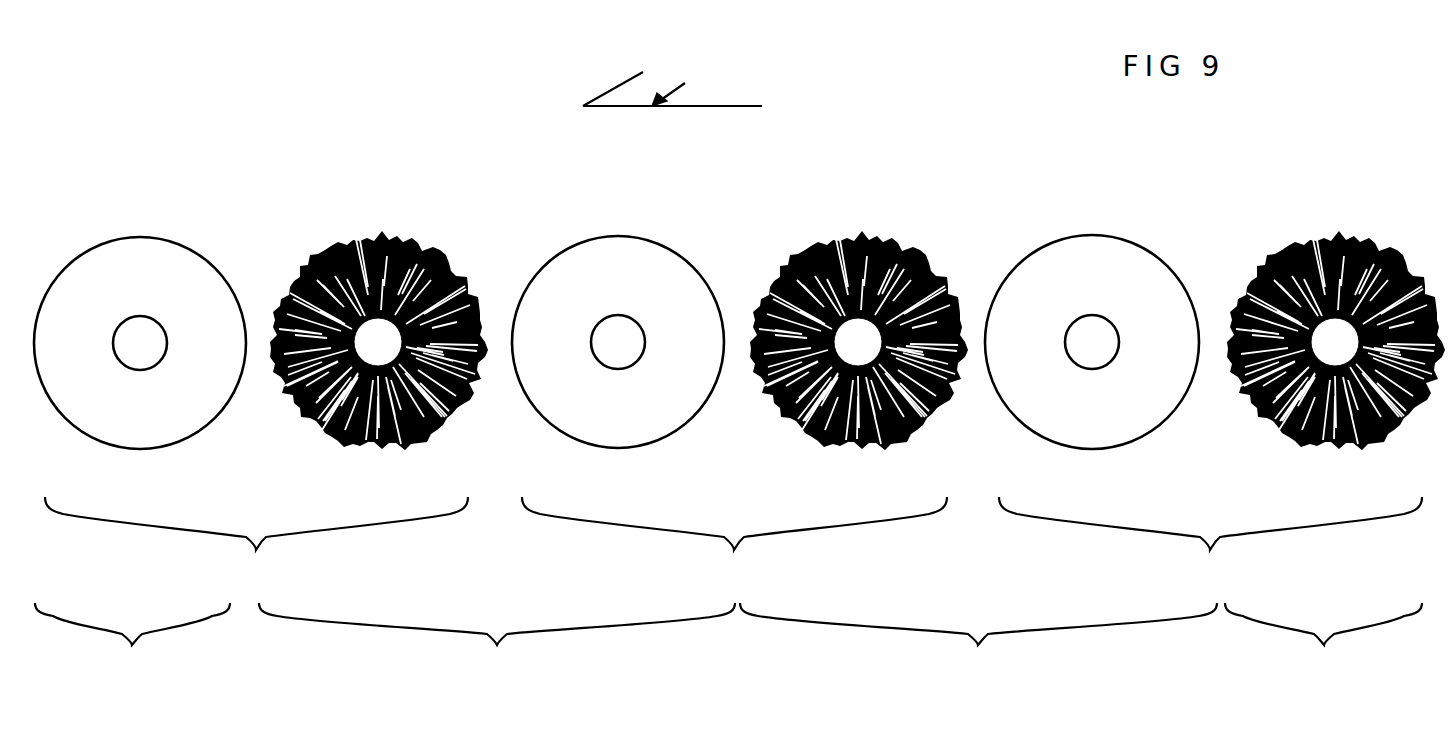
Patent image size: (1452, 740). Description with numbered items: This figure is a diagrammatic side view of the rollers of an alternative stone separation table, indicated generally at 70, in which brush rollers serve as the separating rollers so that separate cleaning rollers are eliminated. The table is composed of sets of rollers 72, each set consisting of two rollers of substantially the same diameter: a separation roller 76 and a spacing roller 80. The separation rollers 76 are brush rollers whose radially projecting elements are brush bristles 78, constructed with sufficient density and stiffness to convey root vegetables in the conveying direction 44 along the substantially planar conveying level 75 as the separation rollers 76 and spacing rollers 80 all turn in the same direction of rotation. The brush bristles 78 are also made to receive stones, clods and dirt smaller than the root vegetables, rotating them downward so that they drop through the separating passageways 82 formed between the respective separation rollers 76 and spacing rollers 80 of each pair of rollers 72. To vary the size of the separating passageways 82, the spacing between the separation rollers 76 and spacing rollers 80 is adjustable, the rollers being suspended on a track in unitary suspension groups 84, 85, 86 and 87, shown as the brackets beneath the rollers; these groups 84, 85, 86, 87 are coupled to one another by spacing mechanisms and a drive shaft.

The conveying direction 44 is at (672, 88).
The brush cleaning assembly 70 is at (1100, 152).
The set of rollers 72 is at (733, 542).
The conveying level 75 is at (552, 185).
The separation roller 76 is at (373, 476).
The brush bristles 78 is at (857, 307).
The spacing roller 80 is at (185, 430).
The separating passageway 82 is at (259, 290).
The suspension group 84 is at (132, 647).
The suspension group 85 is at (497, 647).
The suspension group 86 is at (978, 647).
The suspension group 87 is at (1323, 647).